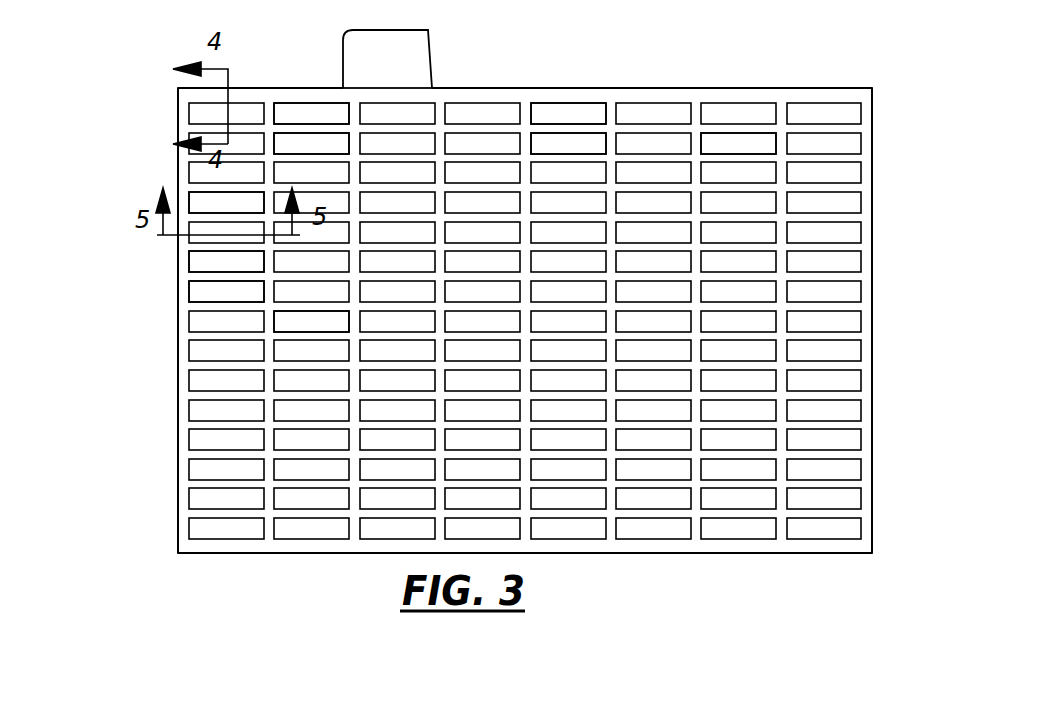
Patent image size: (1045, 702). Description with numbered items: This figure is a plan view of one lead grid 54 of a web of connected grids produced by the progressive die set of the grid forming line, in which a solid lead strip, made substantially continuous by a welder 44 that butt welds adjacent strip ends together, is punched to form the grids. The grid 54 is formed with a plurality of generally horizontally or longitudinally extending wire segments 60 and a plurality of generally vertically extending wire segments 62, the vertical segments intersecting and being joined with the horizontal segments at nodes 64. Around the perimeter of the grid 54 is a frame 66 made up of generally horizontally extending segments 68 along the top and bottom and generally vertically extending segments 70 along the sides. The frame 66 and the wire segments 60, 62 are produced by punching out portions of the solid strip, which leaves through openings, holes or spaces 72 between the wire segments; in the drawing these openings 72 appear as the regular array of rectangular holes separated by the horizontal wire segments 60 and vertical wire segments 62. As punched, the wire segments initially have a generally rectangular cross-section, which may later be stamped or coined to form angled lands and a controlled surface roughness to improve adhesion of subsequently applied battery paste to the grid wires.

The lead grid 54 is at (126, 175).
The welder 44 is at (207, 203).
The horizontally extending wire segments 60 is at (567, 130).
The vertically extending wire segments 62 is at (358, 115).
The nodes 64 is at (272, 130).
The frame 66 is at (177, 93).
The horizontally extending frame segments 68 is at (232, 545).
The vertically extending frame segments 70 is at (183, 442).
The through openings 72 is at (687, 142).